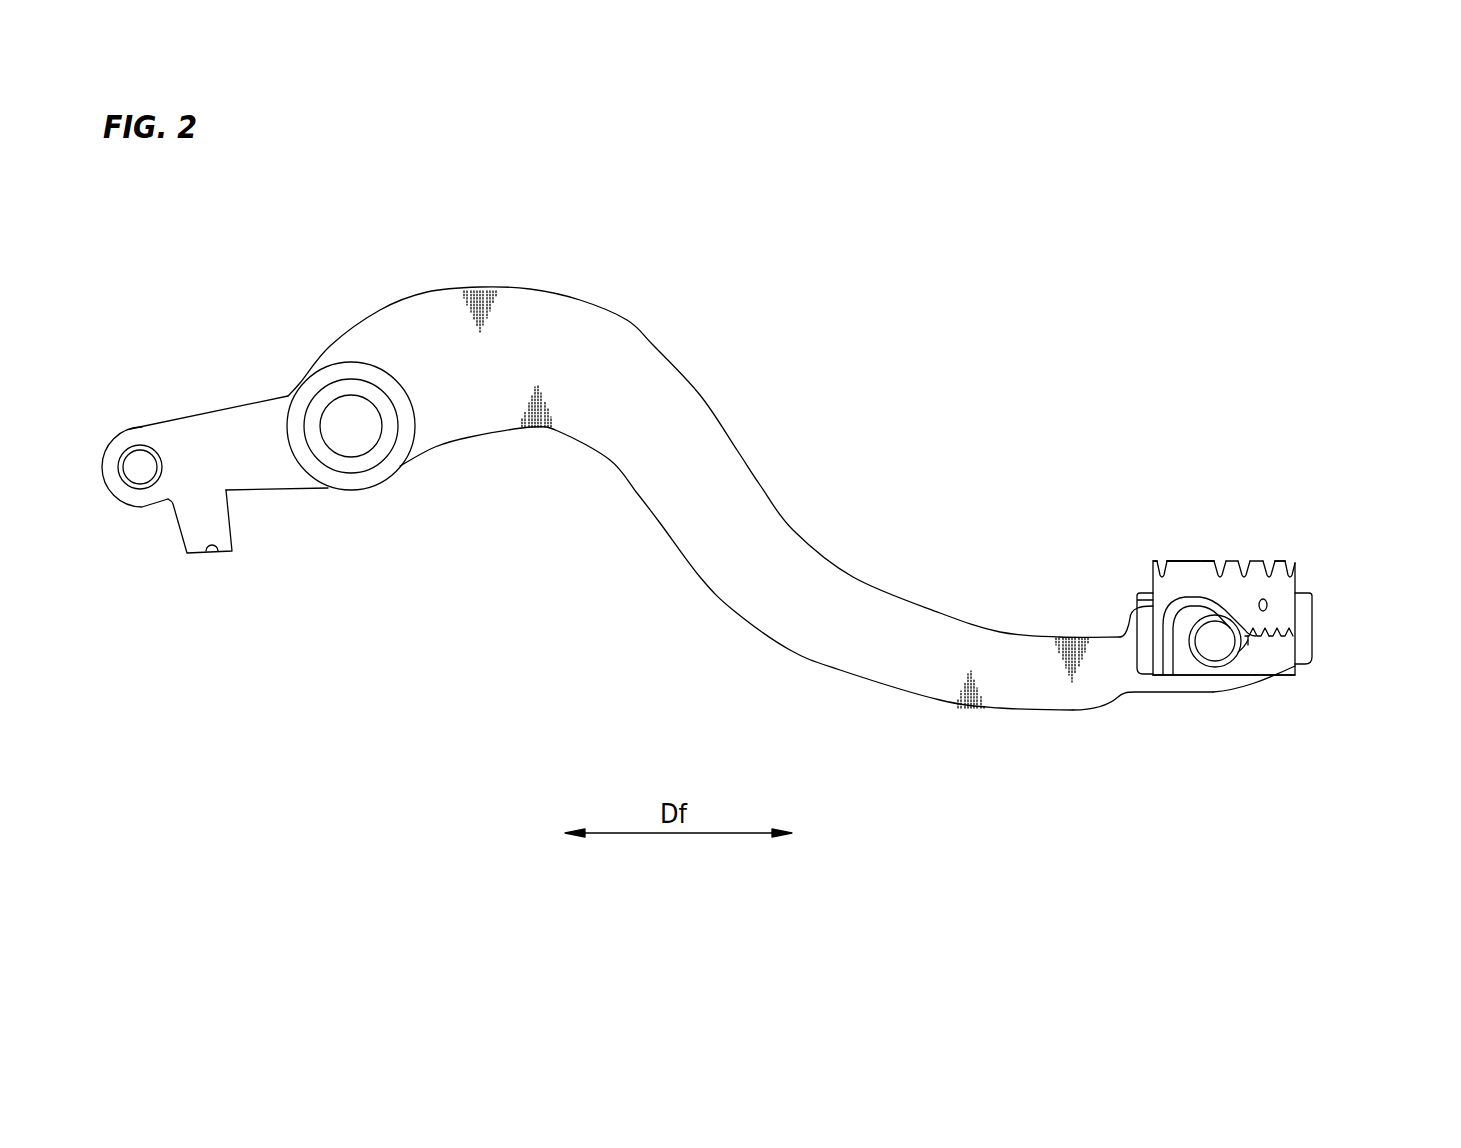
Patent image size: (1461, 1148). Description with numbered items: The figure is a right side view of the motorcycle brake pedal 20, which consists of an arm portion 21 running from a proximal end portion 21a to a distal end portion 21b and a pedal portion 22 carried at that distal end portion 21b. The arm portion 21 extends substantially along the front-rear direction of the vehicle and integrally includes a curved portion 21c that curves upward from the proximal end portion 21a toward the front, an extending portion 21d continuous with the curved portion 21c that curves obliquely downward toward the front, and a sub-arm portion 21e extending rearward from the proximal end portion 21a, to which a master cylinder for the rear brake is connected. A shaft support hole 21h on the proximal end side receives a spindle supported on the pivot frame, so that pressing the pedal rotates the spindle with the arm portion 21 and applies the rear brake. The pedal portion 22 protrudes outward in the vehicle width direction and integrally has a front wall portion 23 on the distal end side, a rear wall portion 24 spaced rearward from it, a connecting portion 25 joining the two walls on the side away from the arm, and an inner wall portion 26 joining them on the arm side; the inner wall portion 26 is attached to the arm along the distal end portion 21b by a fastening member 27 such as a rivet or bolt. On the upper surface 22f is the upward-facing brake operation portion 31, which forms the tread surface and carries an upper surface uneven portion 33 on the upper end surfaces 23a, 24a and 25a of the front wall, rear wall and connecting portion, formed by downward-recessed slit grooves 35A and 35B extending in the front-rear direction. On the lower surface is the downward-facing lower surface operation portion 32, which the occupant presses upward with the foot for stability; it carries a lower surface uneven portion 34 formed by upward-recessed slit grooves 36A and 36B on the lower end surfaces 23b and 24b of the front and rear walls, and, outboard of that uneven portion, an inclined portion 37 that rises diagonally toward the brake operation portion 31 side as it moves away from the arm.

The brake pedal 20 is at (757, 487).
The arm portion 21 is at (740, 610).
The proximal end portion 21a is at (330, 352).
The distal end portion 21b is at (1268, 672).
The curved portion 21c is at (582, 300).
The extending portion 21d is at (905, 692).
The sub-arm portion 21e is at (148, 506).
The shaft support hole 21h is at (382, 420).
The pedal portion 22 is at (1192, 561).
The upper surface 22f is at (1141, 443).
The front wall portion 23 is at (1283, 618).
The upper end surface of the front wall portion 23a is at (1276, 562).
The lower end surface of the front wall portion 23b is at (1280, 668).
The rear wall portion 24 is at (1160, 598).
The upper end surface of the rear wall portion 24a is at (1162, 562).
The lower end surface of the rear wall portion 24b is at (1160, 675).
The connecting portion 25 is at (1183, 585).
The upper end surface of the connecting portion 25a is at (1173, 561).
The inner wall portion 26 is at (1245, 662).
The fastening member 27 is at (1217, 658).
The brake operation portion 31 is at (1213, 560).
The lower surface operation portion 32 is at (1273, 670).
The upper surface uneven portion 33 is at (1223, 474).
The lower surface uneven portion 34 is at (1267, 724).
The slit groove 35A is at (1266, 568).
The slit groove 35B is at (1157, 567).
The slit groove 36A is at (1273, 645).
The slit groove 36B is at (1152, 675).
The inclined portion 37 is at (1162, 622).